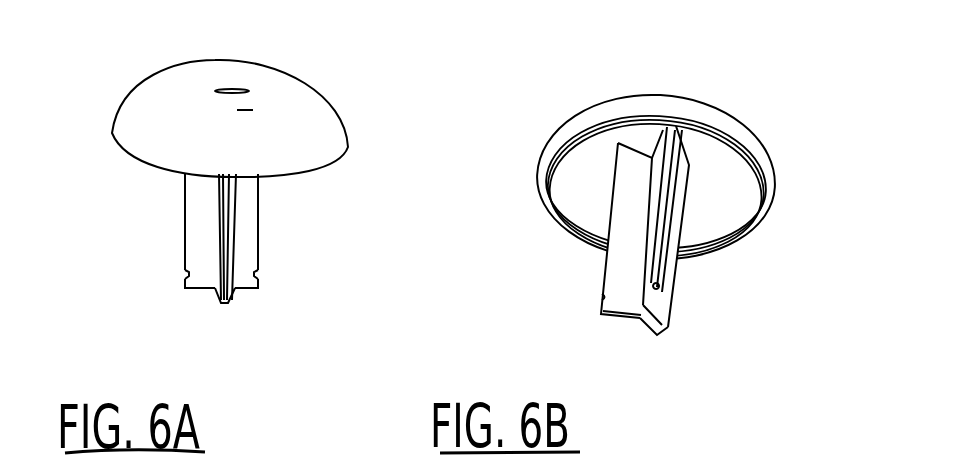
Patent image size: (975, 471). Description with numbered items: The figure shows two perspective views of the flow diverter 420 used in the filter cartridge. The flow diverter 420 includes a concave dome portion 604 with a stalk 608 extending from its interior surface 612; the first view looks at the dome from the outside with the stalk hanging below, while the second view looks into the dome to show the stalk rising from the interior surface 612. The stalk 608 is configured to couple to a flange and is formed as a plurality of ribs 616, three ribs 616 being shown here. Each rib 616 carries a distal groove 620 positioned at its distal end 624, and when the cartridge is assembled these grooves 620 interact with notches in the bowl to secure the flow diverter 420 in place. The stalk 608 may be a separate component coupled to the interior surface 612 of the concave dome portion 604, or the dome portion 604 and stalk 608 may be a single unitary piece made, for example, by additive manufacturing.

In FIG. 6A, the flow diverter 420 is at (340, 82).
In FIG. 6B, the flow diverter 420 is at (737, 98).
In FIG. 6A, the concave dome portion 604 is at (227, 92).
In FIG. 6B, the concave dome portion 604 is at (767, 157).
In FIG. 6A, the stalk 608 is at (165, 200).
In FIG. 6B, the stalk 608 is at (720, 292).
In FIG. 6B, the interior surface 612 is at (603, 180).
In FIG. 6A, the ribs 616 is at (202, 222).
In FIG. 6B, the ribs 616 is at (673, 218).
In FIG. 6A, the distal groove 620 is at (177, 273).
In FIG. 6B, the distal groove 620 is at (595, 300).
In FIG. 6A, the distal end 624 is at (253, 305).
In FIG. 6B, the distal end 624 is at (643, 342).